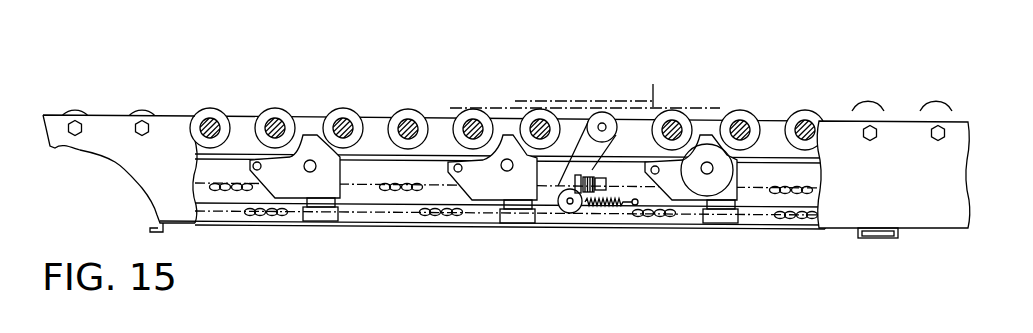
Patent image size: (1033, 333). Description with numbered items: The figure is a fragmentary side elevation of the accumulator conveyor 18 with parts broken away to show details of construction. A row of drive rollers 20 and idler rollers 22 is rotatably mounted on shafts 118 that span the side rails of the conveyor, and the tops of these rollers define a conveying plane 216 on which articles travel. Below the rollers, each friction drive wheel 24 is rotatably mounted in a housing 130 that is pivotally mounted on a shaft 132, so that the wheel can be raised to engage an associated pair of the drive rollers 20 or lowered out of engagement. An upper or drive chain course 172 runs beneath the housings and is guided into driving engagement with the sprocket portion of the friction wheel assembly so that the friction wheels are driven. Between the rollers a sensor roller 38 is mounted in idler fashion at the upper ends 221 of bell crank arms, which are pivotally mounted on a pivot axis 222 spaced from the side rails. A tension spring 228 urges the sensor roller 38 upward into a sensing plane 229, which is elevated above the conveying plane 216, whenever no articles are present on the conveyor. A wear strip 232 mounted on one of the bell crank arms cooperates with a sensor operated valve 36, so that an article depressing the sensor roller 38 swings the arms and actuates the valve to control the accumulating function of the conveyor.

The accumulator conveyor 18 is at (45, 124).
The shafts 118 is at (143, 121).
The drive rollers 20 is at (280, 110).
The friction drive wheels 24 is at (353, 112).
The idler rollers 22 is at (409, 109).
The conveying plane 216 is at (487, 108).
The pivot axis 222 is at (567, 146).
The sensor roller 38 is at (600, 147).
The upper ends 221 is at (607, 112).
The sensing plane 229 is at (653, 84).
The sensor operated valve 36 is at (601, 183).
The tension spring 228 is at (607, 206).
The wear strip 232 is at (568, 208).
The shaft 132 is at (254, 168).
The housing 130 is at (738, 175).
The drive chain course 172 is at (806, 192).